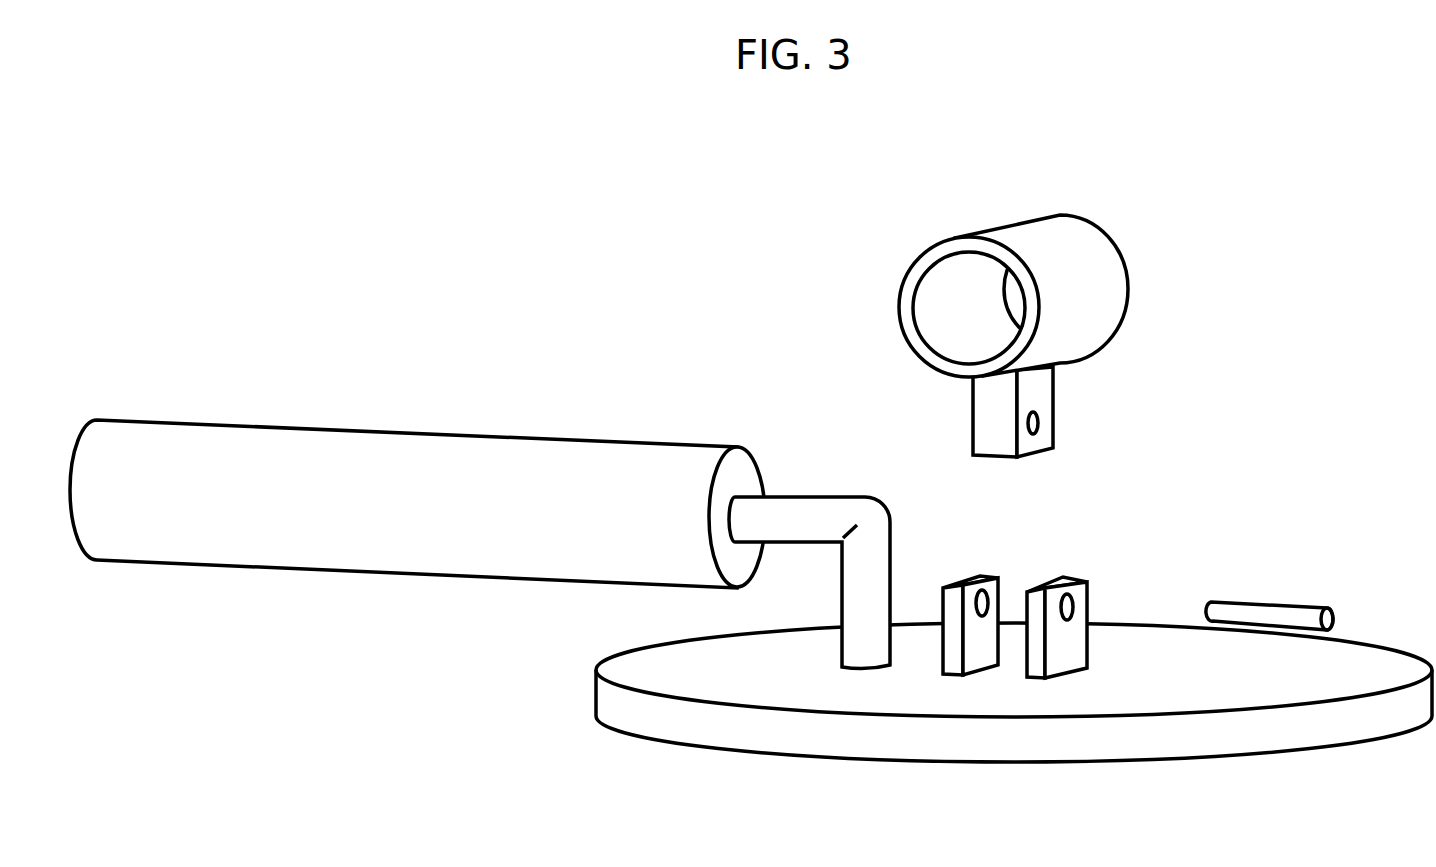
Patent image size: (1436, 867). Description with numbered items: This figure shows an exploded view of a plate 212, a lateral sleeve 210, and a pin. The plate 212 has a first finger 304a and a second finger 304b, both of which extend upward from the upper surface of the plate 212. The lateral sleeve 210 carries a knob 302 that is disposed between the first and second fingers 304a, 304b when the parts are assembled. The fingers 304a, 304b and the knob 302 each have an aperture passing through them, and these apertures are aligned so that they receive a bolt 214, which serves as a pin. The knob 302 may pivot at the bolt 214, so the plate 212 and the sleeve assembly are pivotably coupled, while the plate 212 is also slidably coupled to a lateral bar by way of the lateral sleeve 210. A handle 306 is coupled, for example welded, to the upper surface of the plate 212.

The lateral sleeve 210 is at (1070, 252).
The knob 302 is at (1043, 397).
The handle 306 is at (333, 513).
The bolt 214 is at (1243, 613).
The first finger 304a is at (953, 663).
The second finger 304b is at (1070, 637).
The plate 212 is at (1278, 727).